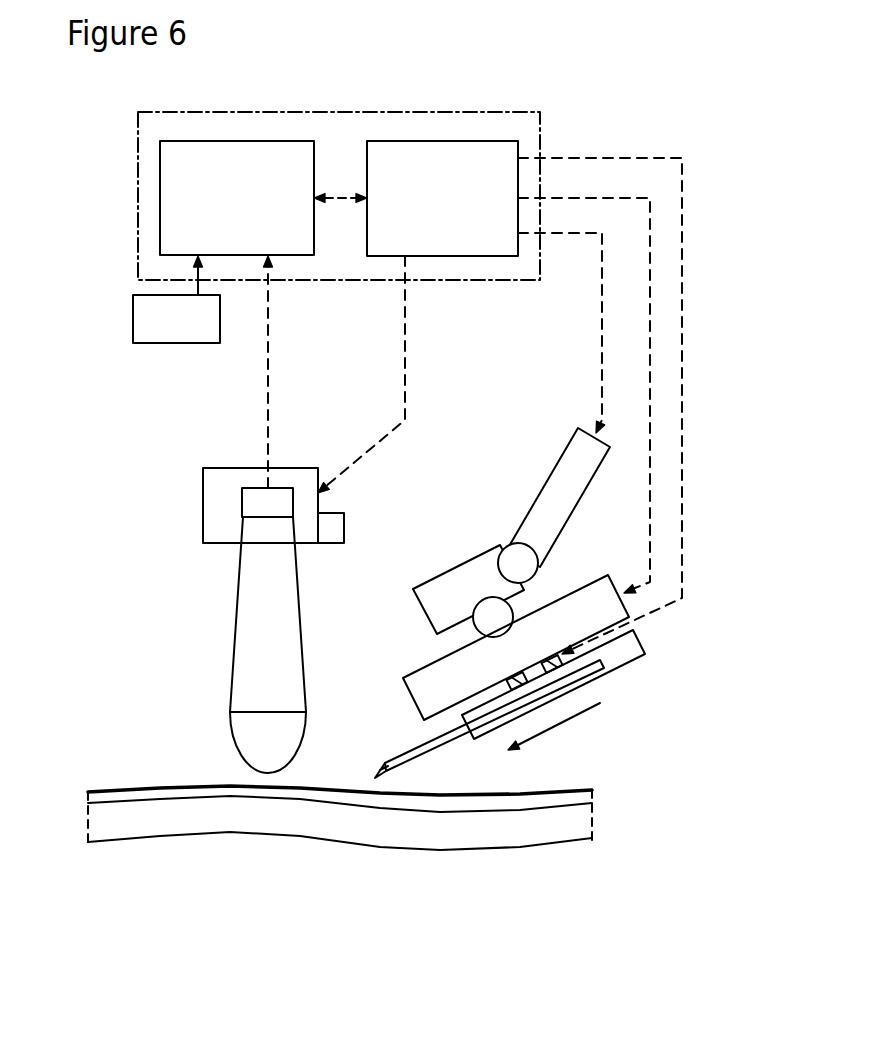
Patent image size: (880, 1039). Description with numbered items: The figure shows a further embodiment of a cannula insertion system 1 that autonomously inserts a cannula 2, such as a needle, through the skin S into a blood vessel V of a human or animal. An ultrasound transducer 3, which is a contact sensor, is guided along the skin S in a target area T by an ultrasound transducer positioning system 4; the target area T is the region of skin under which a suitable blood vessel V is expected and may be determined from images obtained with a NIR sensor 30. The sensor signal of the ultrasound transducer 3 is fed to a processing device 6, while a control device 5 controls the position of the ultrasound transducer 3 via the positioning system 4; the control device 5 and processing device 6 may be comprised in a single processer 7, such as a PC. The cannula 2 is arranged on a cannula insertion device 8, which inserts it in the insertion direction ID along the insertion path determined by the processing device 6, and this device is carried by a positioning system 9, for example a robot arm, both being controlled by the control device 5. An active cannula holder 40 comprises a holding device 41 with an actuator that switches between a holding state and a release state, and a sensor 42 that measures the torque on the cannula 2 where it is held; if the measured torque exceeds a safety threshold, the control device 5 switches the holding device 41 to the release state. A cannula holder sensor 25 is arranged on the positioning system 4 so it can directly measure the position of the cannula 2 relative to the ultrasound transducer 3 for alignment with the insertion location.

The cannula insertion system 1 is at (128, 446).
The cannula 2 is at (462, 715).
The ultrasound transducer 3 is at (260, 633).
The ultrasound transducer positioning system 4 is at (218, 418).
The control device 5 is at (482, 162).
The processing device 6 is at (187, 188).
The processer 7 is at (390, 125).
The cannula insertion device 8 is at (583, 610).
The positioning system 9 is at (582, 457).
The cannula holder sensor 25 is at (333, 522).
The NIR sensor 30 is at (157, 308).
The active cannula holder 40 is at (603, 705).
The holding device 41 is at (553, 663).
The sensor 42 is at (548, 678).
The skin S is at (128, 787).
The target area T is at (250, 788).
The blood vessel V is at (320, 840).
The insertion direction ID is at (554, 744).